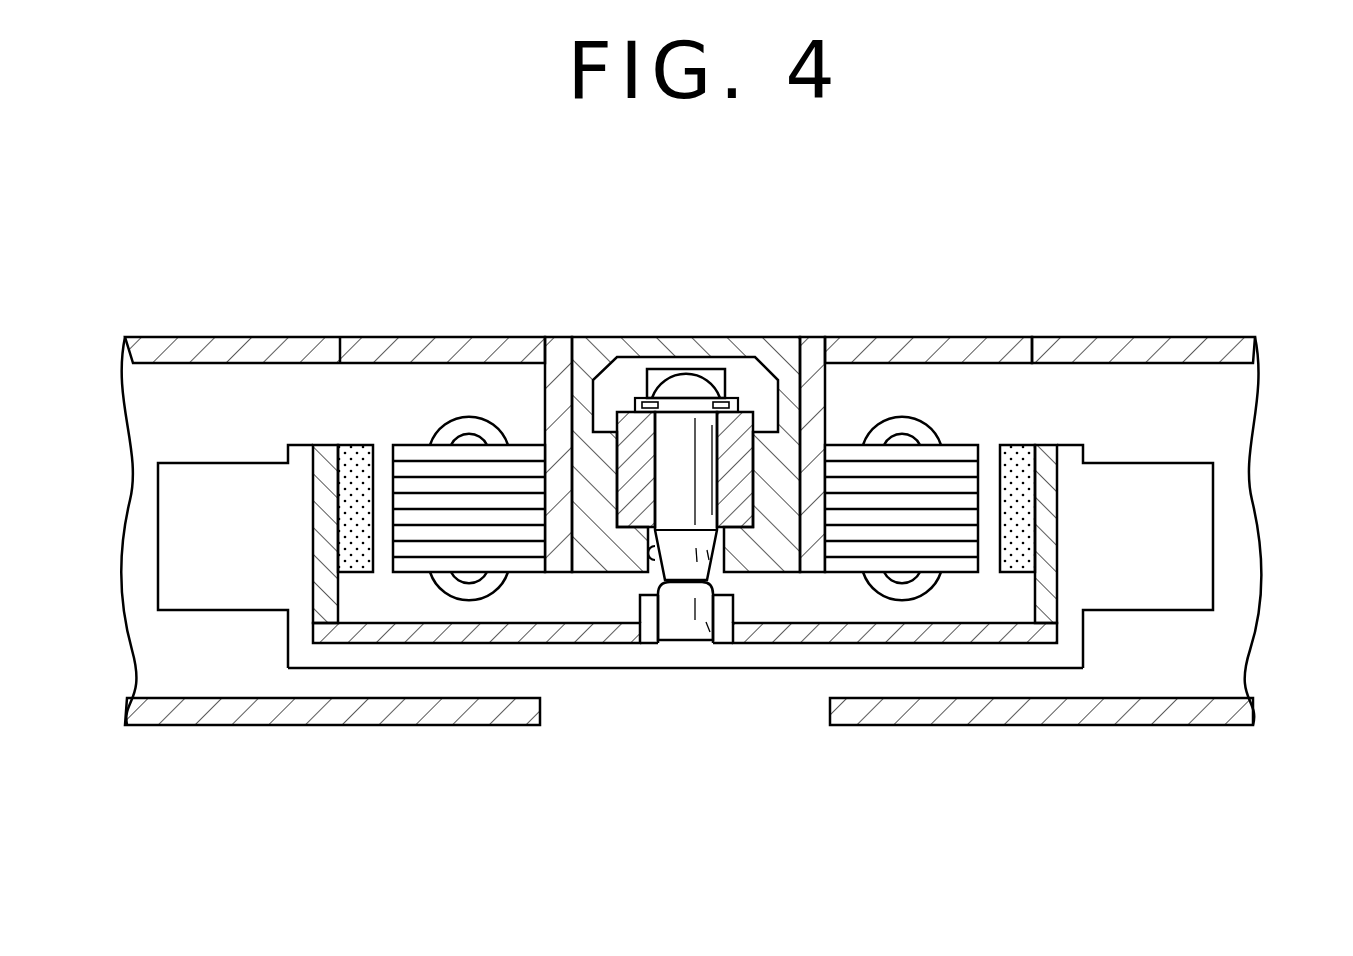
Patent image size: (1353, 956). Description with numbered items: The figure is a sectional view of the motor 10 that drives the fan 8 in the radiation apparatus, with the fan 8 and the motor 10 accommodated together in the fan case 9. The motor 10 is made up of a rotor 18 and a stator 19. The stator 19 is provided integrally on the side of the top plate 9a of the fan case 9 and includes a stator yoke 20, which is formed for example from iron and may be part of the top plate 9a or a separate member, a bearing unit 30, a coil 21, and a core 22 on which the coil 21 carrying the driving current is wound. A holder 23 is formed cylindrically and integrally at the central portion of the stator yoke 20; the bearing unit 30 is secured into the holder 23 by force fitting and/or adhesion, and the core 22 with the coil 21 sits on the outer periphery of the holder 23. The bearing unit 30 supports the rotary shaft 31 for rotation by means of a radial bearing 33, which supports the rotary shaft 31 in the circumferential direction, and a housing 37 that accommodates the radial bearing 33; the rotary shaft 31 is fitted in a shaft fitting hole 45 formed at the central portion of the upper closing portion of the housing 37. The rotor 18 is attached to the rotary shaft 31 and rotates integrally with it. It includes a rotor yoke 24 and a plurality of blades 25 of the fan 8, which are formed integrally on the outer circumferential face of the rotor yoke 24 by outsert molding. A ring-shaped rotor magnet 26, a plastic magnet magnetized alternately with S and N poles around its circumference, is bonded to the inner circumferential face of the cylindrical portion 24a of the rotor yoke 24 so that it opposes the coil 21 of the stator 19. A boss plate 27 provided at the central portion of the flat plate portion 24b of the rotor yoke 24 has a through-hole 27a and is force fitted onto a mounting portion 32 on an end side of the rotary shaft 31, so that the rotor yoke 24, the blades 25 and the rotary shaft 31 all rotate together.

The motor 10 is at (1158, 298).
The fan 8 is at (1198, 510).
The fan case 9 is at (1220, 715).
The top plate 9a is at (1240, 352).
The rotor 18 is at (387, 662).
The stator 19 is at (365, 340).
The stator yoke 20 is at (977, 345).
The coil 21 is at (447, 433).
The core 22 is at (408, 570).
The holder 23 is at (813, 420).
The rotor yoke 24 is at (1047, 632).
The cylindrical portion 24a is at (1050, 480).
The flat plate portion 24b is at (785, 635).
The blades 25 is at (175, 577).
The rotor magnet 26 is at (357, 453).
The boss plate 27 is at (730, 617).
The through-hole 27a is at (673, 610).
The bearing unit 30 is at (687, 338).
The rotary shaft 31 is at (677, 453).
The mounting portion 32 is at (703, 627).
The radial bearing 33 is at (613, 472).
The housing 37 is at (578, 385).
The shaft fitting hole 45 is at (648, 556).